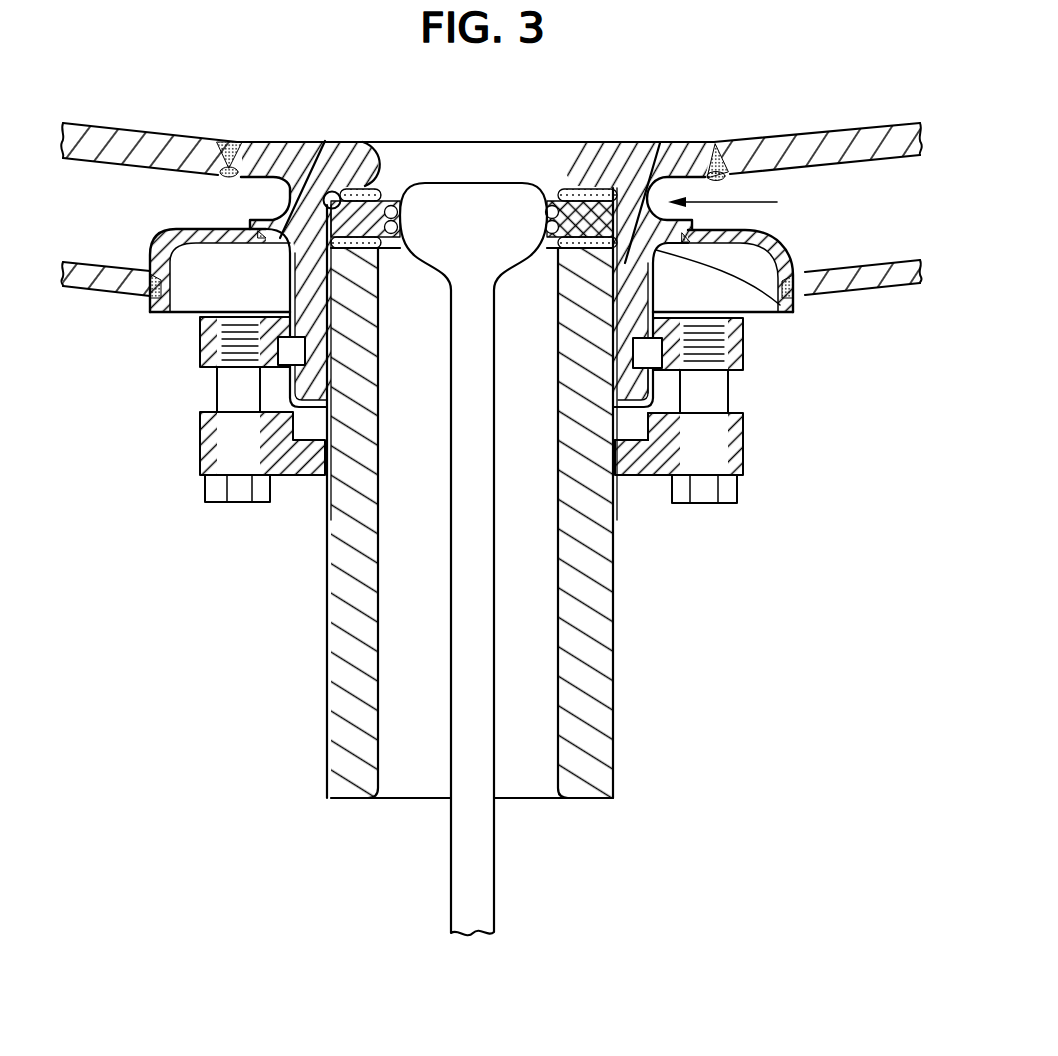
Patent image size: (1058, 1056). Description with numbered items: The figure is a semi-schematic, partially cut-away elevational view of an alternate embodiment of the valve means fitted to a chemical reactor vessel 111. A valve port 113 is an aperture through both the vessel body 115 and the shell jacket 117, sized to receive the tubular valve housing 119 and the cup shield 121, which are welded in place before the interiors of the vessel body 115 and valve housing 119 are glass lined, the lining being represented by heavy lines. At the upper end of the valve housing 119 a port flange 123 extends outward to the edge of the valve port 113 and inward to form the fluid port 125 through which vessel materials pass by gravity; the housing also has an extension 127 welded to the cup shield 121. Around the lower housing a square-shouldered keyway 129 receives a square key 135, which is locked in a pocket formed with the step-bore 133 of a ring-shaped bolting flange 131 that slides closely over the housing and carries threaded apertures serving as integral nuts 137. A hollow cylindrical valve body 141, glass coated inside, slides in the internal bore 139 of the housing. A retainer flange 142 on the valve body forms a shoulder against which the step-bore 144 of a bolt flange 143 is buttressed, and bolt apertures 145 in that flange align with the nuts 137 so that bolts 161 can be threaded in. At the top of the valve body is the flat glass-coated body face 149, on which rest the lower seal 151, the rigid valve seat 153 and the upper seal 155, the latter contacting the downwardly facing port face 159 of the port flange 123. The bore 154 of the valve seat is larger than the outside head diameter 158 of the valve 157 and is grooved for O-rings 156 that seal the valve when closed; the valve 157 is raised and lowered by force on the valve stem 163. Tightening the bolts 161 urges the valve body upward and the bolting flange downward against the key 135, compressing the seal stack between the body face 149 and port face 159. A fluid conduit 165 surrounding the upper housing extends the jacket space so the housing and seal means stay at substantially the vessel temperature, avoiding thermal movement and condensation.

The vessel 111 is at (803, 114).
The valve port 113 is at (716, 139).
The vessel body 115 is at (139, 131).
The shell jacket 117 is at (94, 291).
The valve housing 119 is at (207, 178).
The cup shield 121 is at (177, 311).
The port flange 123 is at (267, 141).
The fluid port 125 is at (382, 192).
The extension 127 is at (712, 300).
The keyway 129 is at (636, 342).
The bolting flange 131 is at (199, 353).
The step-bore 133 is at (305, 350).
The key 135 is at (652, 380).
The nuts 137 is at (738, 326).
The internal bore 139 is at (380, 397).
The valve body 141 is at (330, 592).
The retainer flange 142 is at (640, 442).
The bolt flange 143 is at (745, 448).
The step-bore 144 is at (641, 445).
The bolt apertures 145 is at (219, 443).
The body face 149 is at (644, 147).
The lower seal 151 is at (576, 189).
The valve seat 153 is at (433, 270).
The bore 154 is at (400, 226).
The upper seal 155 is at (542, 220).
The O-rings 156 is at (527, 272).
The valve 157 is at (468, 183).
The outside head diameter 158 is at (400, 212).
The port face 159 is at (331, 192).
The bolts 161 is at (214, 396).
The valve stem 163 is at (451, 882).
The fluid conduit 165 is at (747, 203).